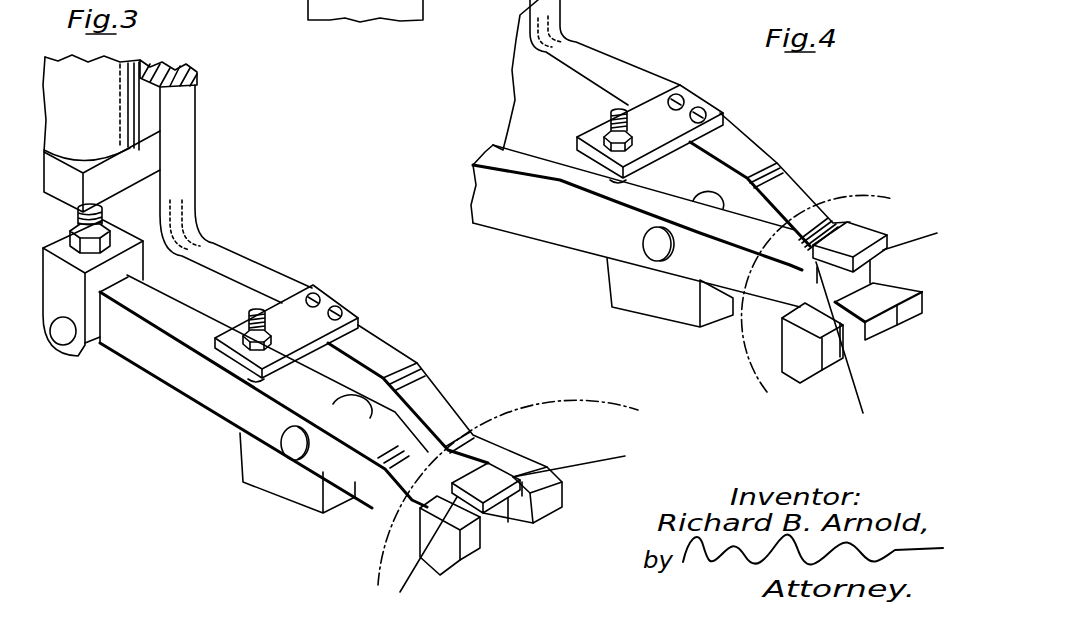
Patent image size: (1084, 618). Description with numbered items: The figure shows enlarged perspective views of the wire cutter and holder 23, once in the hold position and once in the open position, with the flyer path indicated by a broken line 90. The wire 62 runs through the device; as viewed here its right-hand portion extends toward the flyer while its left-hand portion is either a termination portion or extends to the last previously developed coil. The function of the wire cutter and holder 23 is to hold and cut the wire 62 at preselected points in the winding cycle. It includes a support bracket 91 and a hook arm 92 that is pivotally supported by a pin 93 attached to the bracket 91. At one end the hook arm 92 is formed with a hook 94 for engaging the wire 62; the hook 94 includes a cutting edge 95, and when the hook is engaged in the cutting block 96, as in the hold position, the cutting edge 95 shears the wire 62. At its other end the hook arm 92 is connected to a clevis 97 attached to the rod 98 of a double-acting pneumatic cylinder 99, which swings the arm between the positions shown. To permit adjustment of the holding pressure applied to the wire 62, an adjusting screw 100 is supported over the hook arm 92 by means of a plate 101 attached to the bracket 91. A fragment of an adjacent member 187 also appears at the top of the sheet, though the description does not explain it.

In FIG. 3, the wire cutter and holder 23 is at (240, 237).
In FIG. 4, the wire cutter and holder 23 is at (632, 62).
In FIG. 3, the wire 62 is at (562, 466).
In FIG. 4, the wire 62 is at (913, 238).
In FIG. 3, the flyer path 90 is at (527, 412).
In FIG. 4, the flyer path 90 is at (860, 200).
In FIG. 3, the support bracket 91 is at (377, 350).
In FIG. 4, the support bracket 91 is at (748, 154).
In FIG. 3, the hook arm 92 is at (190, 379).
In FIG. 4, the hook arm 92 is at (566, 233).
In FIG. 3, the pin 93 is at (288, 435).
In FIG. 4, the pin 93 is at (659, 252).
In FIG. 3, the hook 94 is at (508, 498).
In FIG. 4, the hook 94 is at (873, 272).
In FIG. 3, the cutting edge 95 is at (508, 512).
In FIG. 4, the cutting edge 95 is at (833, 260).
In FIG. 3, the cutting block 96 is at (467, 543).
In FIG. 4, the cutting block 96 is at (829, 328).
In FIG. 3, the clevis 97 is at (125, 238).
In FIG. 3, the rod 98 is at (80, 215).
In FIG. 3, the double-acting pneumatic cylinder 99 is at (125, 115).
In FIG. 3, the adjusting screw 100 is at (262, 308).
In FIG. 4, the adjusting screw 100 is at (610, 114).
In FIG. 3, the plate 101 is at (315, 318).
In FIG. 4, the plate 101 is at (682, 111).
In FIG. 3, the member 187 is at (452, 0).